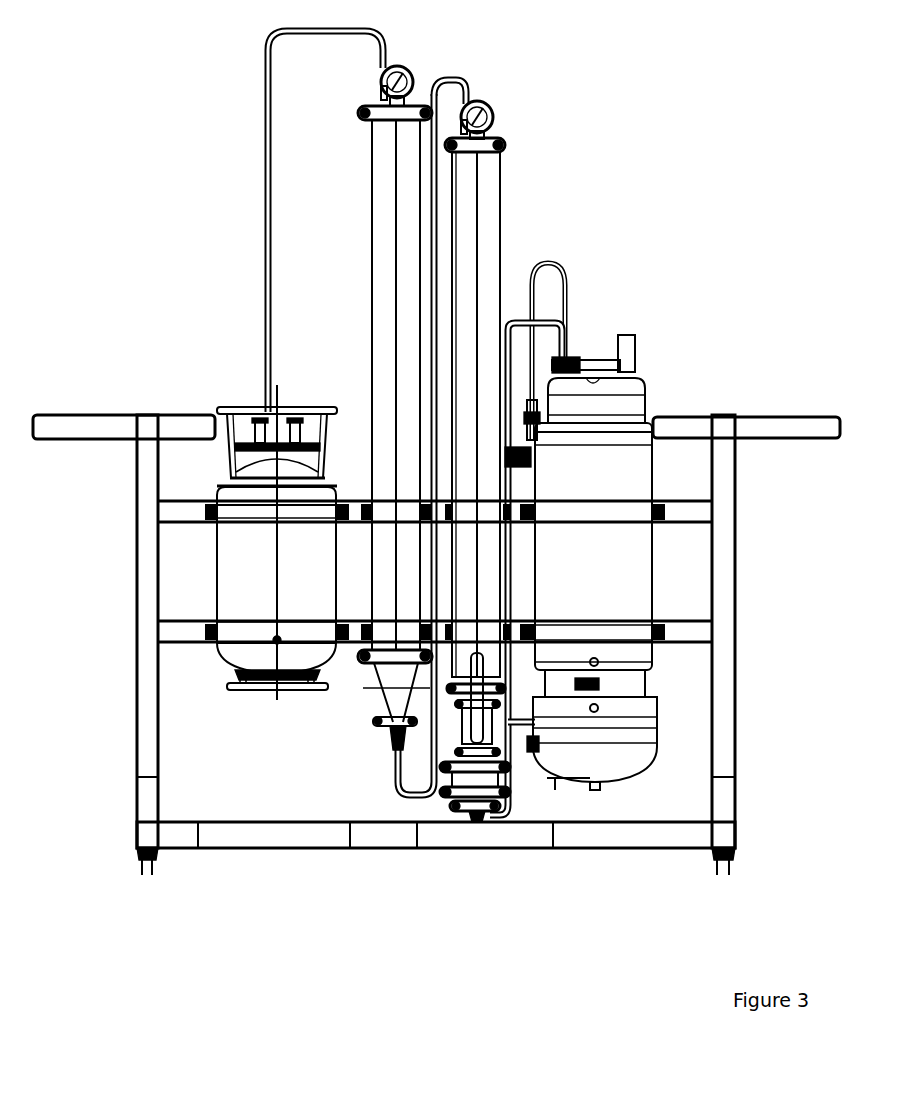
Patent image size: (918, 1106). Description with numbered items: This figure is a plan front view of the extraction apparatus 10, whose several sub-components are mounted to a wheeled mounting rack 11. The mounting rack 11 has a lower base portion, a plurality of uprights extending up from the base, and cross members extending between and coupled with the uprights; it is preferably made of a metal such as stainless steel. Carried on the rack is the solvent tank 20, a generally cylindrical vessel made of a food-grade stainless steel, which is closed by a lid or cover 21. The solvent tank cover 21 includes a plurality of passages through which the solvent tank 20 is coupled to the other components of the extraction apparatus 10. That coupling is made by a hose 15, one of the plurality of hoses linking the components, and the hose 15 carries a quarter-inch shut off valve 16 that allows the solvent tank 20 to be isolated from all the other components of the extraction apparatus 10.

The extraction apparatus 10 is at (436, 453).
The mounting rack 11 is at (735, 662).
The hose 15 is at (265, 190).
The shut off valve 16 is at (257, 437).
The solvent tank 20 is at (210, 662).
The solvent tank cover 21 is at (318, 472).